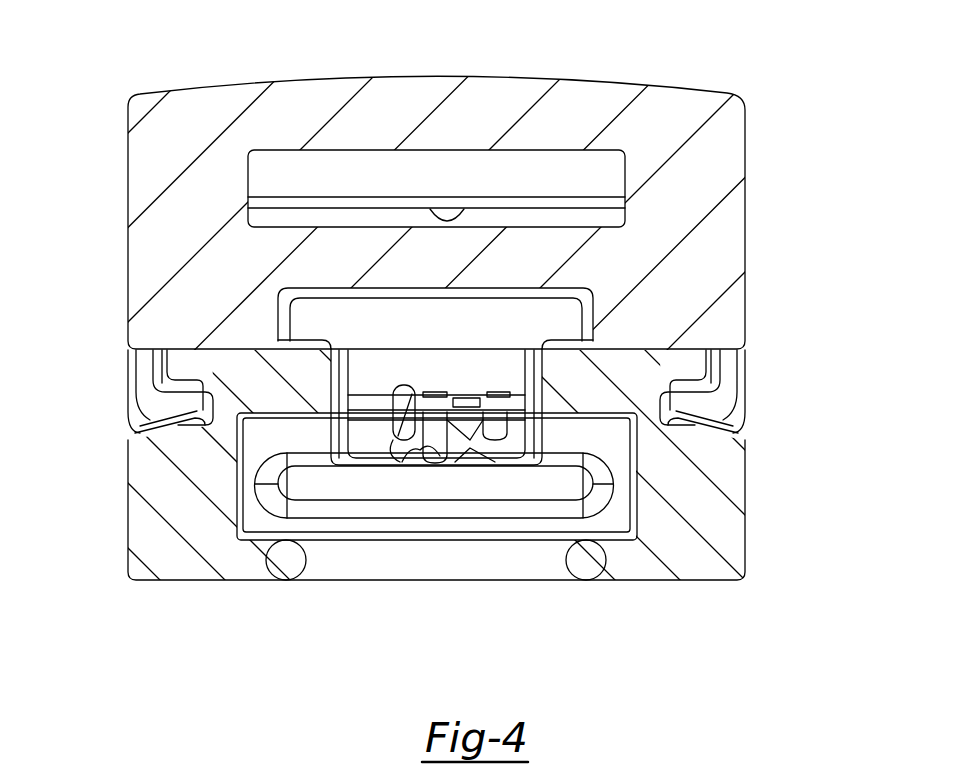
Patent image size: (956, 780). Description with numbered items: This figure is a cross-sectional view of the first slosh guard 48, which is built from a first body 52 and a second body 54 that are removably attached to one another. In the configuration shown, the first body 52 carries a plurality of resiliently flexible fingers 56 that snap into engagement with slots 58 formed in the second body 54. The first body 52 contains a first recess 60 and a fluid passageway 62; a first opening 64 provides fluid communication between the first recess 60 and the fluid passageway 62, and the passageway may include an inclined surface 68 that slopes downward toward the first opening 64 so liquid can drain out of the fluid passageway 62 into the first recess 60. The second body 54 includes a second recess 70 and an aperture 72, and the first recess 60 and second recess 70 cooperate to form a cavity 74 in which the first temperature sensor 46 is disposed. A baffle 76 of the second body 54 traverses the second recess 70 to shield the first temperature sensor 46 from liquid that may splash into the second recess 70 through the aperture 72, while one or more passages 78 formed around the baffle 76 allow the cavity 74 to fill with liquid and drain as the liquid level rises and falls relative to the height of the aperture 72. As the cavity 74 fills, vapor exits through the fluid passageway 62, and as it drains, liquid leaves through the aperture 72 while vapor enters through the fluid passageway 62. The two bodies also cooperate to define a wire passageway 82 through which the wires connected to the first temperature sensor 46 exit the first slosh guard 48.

The first slosh guard 48 is at (718, 58).
The first body 52 is at (754, 146).
The second body 54 is at (770, 557).
The fluid passageway 62 is at (280, 176).
The inclined surface 68 is at (355, 226).
The first opening 64 is at (445, 218).
The cavity 74 is at (575, 296).
The first recess 60 is at (572, 328).
The second recess 70 is at (498, 378).
The first temperature sensor 46 is at (378, 395).
The wire passageway 82 is at (393, 462).
The resiliently flexible fingers 56 is at (142, 402).
The slots 58 is at (170, 438).
The aperture 72 is at (348, 568).
The baffle 76 is at (472, 487).
The passages 78 is at (253, 513).